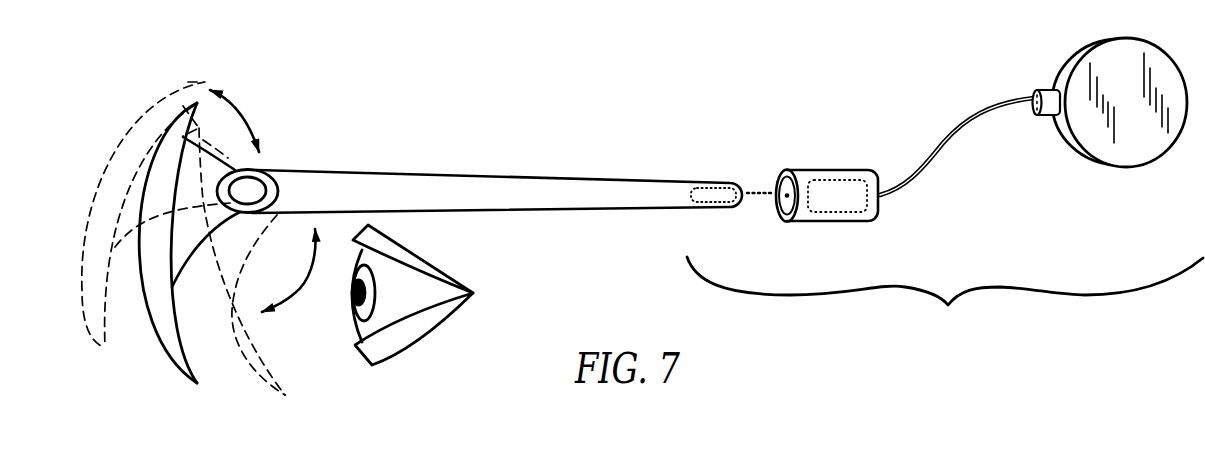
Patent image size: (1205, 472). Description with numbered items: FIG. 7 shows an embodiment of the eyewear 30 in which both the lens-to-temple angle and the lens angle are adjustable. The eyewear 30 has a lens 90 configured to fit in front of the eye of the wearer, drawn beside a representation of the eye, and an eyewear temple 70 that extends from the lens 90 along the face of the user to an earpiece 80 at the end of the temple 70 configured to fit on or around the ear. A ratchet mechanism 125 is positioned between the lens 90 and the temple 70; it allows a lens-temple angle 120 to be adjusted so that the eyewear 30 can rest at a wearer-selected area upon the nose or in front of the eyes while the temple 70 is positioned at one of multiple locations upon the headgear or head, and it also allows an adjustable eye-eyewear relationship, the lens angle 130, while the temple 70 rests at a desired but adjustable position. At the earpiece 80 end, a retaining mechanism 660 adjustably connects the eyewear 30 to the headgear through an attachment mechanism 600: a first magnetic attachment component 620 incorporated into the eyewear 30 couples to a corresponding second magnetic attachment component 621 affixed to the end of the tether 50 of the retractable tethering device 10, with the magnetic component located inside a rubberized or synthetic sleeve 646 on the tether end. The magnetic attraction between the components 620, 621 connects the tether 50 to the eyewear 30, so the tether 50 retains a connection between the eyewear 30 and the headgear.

The retractable tethering device 10 is at (1135, 167).
The eyewear 30 is at (176, 399).
The tether 50 is at (970, 120).
The eyewear temple 70 is at (511, 174).
The earpiece 80 is at (643, 180).
The lens 90 is at (124, 102).
The lens-temple angle 120 is at (248, 115).
The ratchet mechanism 125 is at (262, 181).
The lens angle 130 is at (304, 290).
The attachment mechanism 600 is at (916, 220).
The first magnetic attachment component 620 is at (708, 199).
The second magnetic attachment component 621 is at (833, 209).
The sleeve 646 is at (807, 168).
The retaining mechanism 660 is at (945, 295).